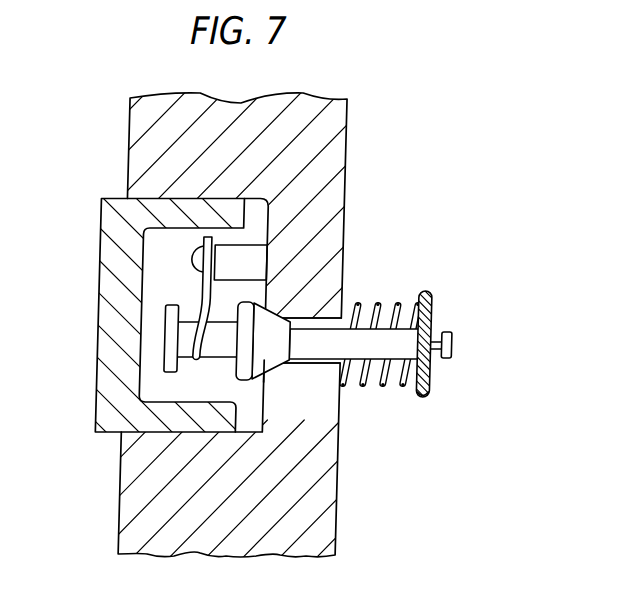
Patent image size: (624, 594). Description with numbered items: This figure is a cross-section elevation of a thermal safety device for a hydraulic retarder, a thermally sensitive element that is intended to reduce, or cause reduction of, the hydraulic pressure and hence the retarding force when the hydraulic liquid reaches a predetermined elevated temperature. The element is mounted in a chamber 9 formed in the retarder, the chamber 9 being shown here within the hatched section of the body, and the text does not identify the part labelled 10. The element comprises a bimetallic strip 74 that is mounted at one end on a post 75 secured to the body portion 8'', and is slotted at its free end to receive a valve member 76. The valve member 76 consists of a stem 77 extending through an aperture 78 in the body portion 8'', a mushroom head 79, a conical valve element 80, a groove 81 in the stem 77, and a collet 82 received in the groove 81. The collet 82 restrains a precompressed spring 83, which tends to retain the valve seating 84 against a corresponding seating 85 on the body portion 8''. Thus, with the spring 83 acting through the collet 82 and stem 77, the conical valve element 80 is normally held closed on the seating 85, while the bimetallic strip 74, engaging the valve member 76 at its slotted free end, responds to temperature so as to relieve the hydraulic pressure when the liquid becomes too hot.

The body portion 8'' is at (270, 339).
The housing bracket 10 is at (100, 369).
The chamber 9 is at (191, 316).
The bimetallic strip 74 is at (197, 289).
The post 75 is at (243, 262).
The valve member 76 is at (445, 312).
The stem 77 is at (362, 340).
The aperture 78 is at (322, 325).
The mushroom head 79 is at (165, 322).
The conical valve element 80 is at (249, 342).
The groove 81 is at (453, 345).
The collet 82 is at (430, 392).
The precompressed spring 83 is at (393, 378).
The valve seating 84 is at (262, 297).
The seating 85 is at (280, 370).